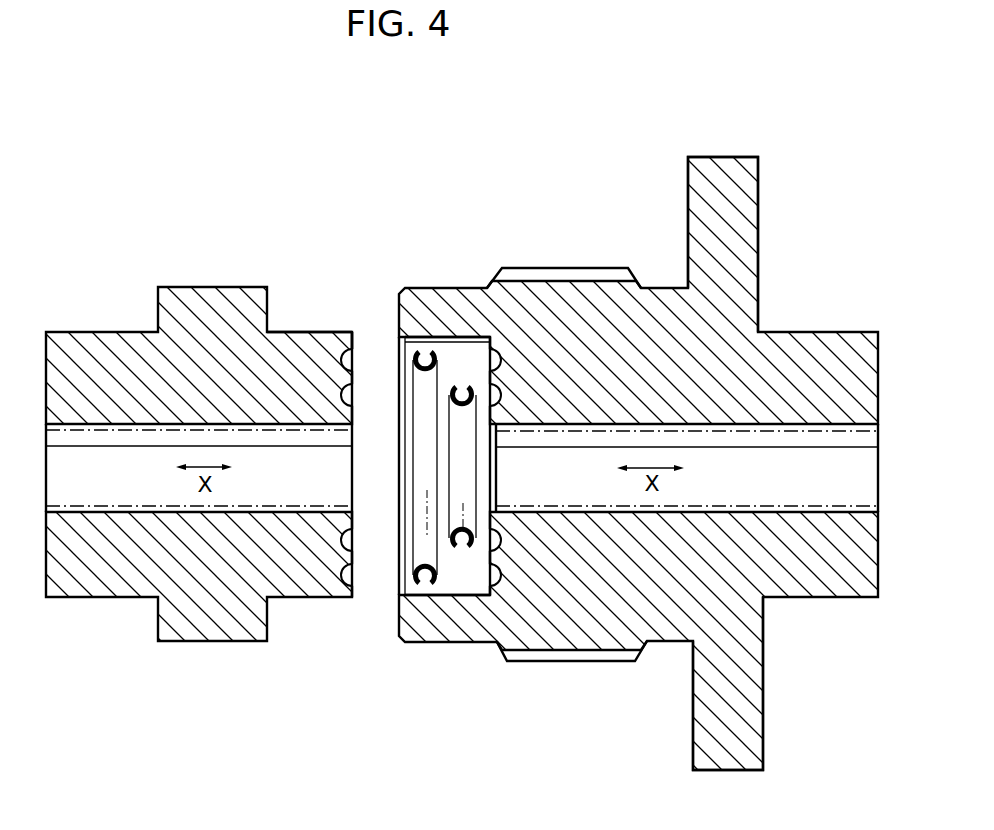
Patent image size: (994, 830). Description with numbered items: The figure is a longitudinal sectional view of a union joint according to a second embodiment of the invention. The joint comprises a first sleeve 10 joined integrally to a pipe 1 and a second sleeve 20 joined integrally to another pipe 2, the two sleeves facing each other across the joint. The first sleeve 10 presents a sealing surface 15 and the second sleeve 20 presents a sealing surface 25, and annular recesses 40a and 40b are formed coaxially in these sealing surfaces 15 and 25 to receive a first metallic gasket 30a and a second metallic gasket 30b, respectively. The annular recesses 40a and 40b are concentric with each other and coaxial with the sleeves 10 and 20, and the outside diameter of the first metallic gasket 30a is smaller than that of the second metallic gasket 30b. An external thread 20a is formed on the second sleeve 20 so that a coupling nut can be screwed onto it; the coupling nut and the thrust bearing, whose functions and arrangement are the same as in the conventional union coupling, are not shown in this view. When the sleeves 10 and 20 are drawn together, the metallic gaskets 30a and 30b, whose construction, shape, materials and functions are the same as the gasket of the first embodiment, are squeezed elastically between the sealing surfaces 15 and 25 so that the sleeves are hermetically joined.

The pipe 1 is at (80, 327).
The pipe 2 is at (715, 150).
The first sleeve 10 is at (300, 330).
The sealing surface 15 is at (361, 351).
The second sleeve 20 is at (417, 288).
The external thread 20a is at (630, 273).
The sealing surface 25 is at (468, 335).
The first metallic gasket 30a is at (456, 549).
The second metallic gasket 30b is at (418, 587).
The annular recess 40a is at (370, 548).
The annular recess 40b is at (362, 578).